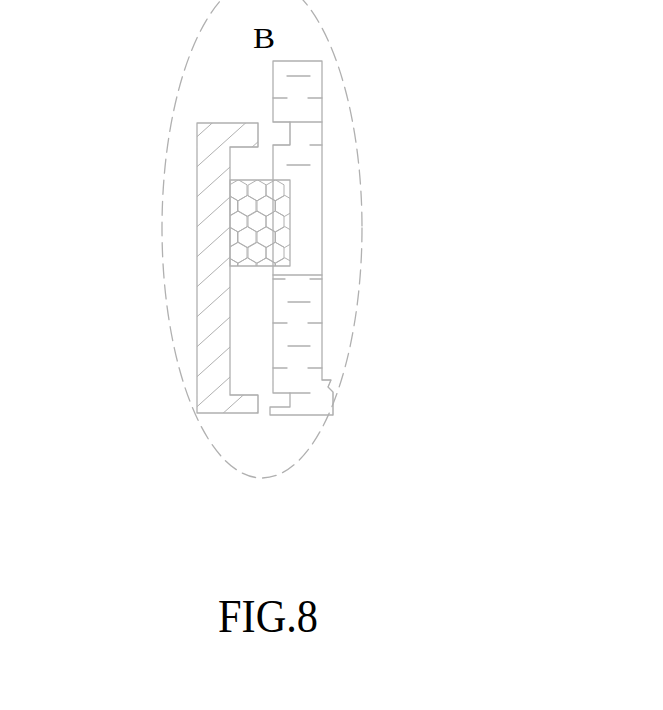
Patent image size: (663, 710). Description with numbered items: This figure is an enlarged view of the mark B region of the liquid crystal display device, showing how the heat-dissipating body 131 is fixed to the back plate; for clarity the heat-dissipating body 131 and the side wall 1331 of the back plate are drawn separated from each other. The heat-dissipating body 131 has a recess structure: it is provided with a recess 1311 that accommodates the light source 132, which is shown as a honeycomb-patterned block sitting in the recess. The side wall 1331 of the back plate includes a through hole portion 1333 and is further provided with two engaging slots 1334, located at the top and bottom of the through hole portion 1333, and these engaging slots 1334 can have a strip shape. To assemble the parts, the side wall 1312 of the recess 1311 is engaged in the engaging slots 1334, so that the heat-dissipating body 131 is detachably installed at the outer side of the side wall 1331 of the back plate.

The heat-dissipating body 131 is at (168, 295).
The recess 1311 is at (243, 317).
The side wall 1312 is at (243, 132).
The light source 132 is at (275, 232).
The side wall 1331 is at (300, 347).
The through hole portion 1333 is at (310, 197).
The engaging slot 1334 is at (278, 134).